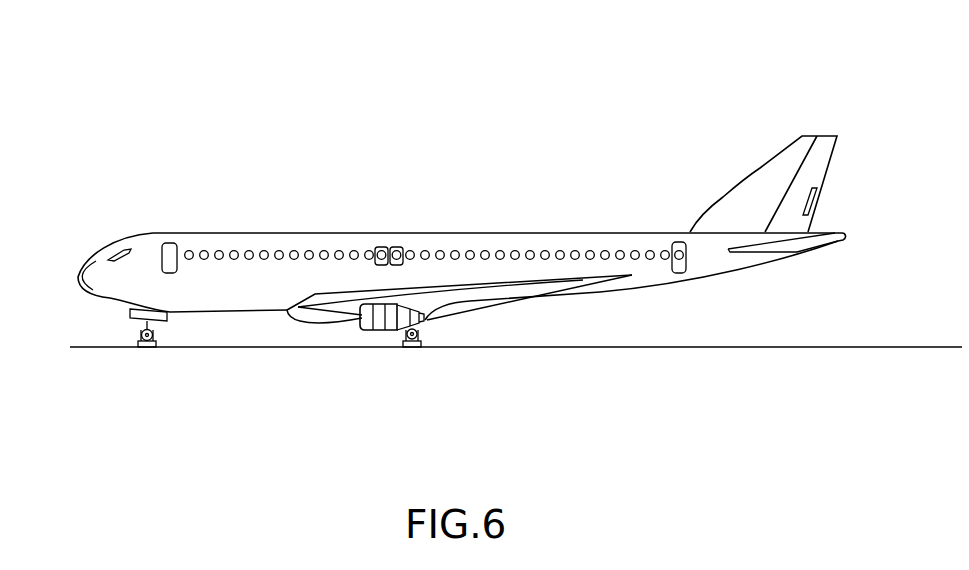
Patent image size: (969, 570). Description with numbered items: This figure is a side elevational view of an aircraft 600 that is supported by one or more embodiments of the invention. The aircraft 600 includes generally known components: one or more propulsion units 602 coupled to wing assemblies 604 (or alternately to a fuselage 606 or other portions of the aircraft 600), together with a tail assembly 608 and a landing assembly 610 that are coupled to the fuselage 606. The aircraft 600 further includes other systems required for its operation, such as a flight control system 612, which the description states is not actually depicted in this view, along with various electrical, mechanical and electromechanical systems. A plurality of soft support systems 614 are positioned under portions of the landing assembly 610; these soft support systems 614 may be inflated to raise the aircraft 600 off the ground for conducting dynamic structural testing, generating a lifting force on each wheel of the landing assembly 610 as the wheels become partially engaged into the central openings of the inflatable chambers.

The aircraft 600 is at (633, 78).
The propulsion unit 602 is at (360, 333).
The wing assembly 604 is at (470, 295).
The fuselage 606 is at (446, 231).
The tail assembly 608 is at (855, 202).
The landing assembly 610 is at (144, 328).
The flight control system 612 is at (103, 264).
The soft support system 614 is at (138, 343).